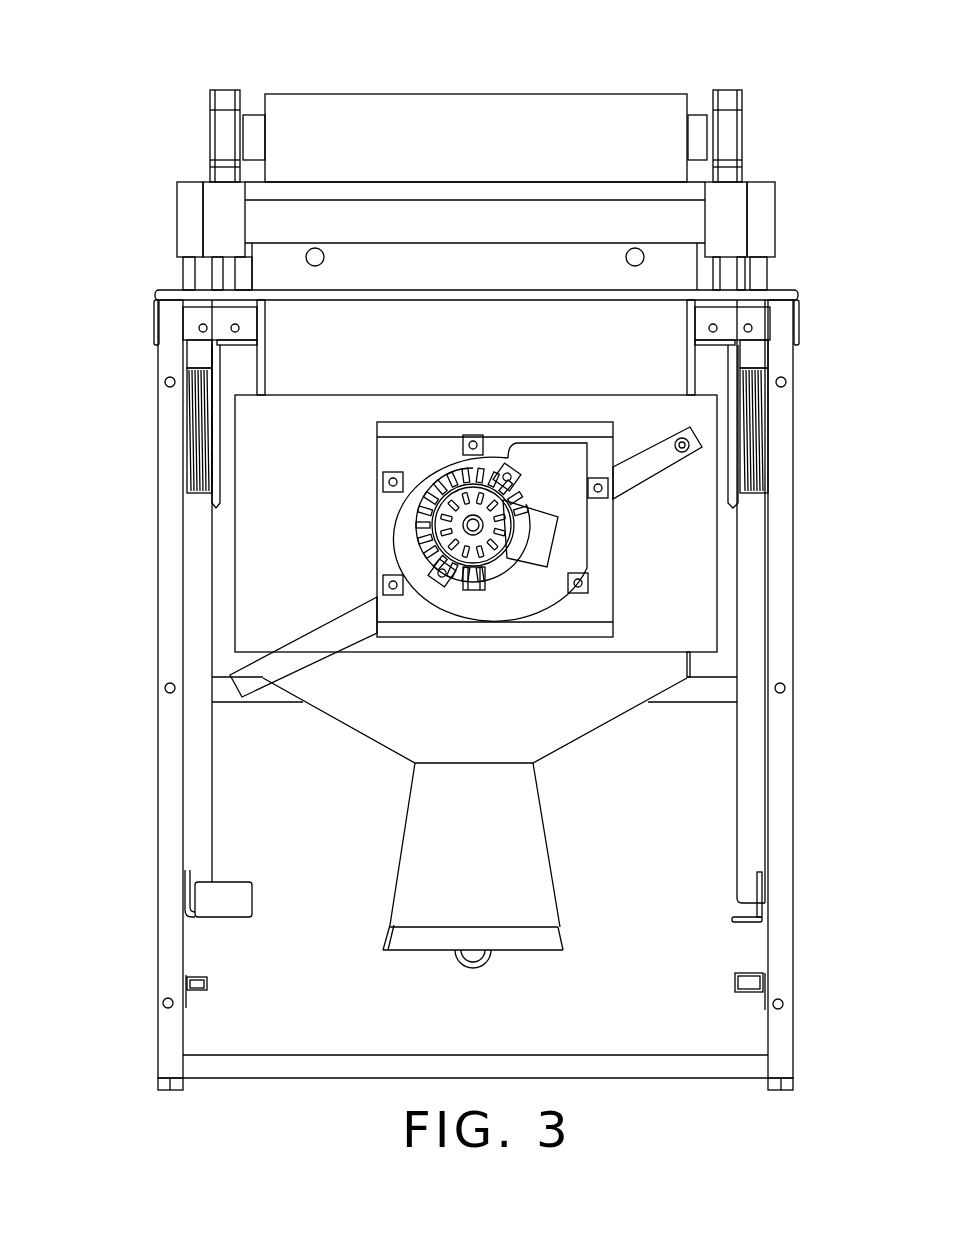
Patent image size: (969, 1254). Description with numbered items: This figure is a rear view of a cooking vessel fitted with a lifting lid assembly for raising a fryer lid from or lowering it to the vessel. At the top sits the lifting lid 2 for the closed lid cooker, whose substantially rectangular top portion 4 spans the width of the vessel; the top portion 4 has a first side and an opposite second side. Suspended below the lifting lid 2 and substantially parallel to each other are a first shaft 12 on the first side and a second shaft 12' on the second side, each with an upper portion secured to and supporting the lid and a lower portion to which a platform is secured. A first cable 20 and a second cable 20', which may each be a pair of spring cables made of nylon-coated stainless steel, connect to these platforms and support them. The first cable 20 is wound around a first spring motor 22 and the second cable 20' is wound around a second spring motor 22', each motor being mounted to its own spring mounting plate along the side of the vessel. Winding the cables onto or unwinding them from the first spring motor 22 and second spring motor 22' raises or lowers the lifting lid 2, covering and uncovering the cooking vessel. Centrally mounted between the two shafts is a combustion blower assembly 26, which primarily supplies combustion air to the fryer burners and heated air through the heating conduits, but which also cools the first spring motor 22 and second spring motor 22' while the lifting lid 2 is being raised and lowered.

The lifting lid 2 is at (499, 62).
The top portion 4 is at (644, 93).
The first shaft 12 is at (168, 939).
The second shaft 12' is at (808, 941).
The first cable 20 is at (108, 695).
The second cable 20' is at (840, 695).
The first spring motor 22 is at (125, 424).
The second spring motor 22' is at (821, 424).
The combustion blower assembly 26 is at (415, 534).